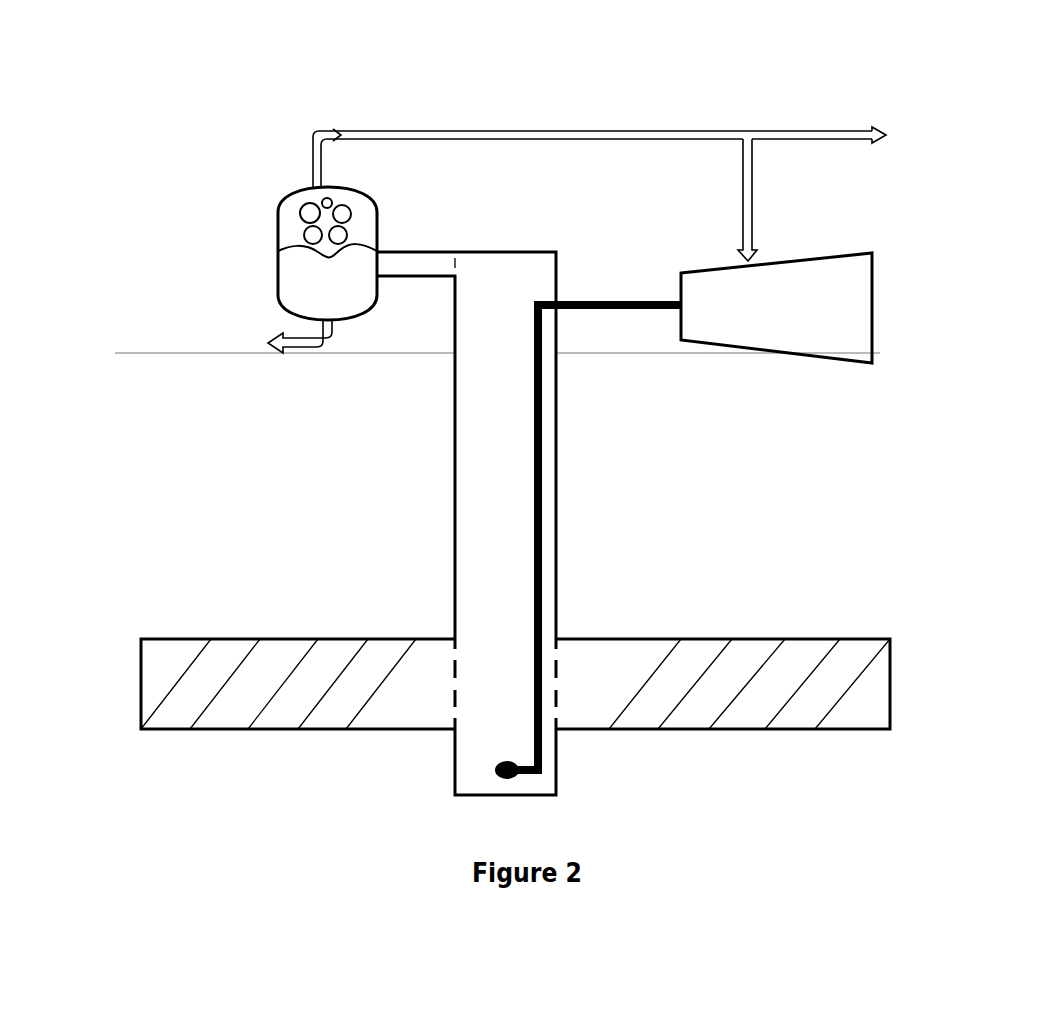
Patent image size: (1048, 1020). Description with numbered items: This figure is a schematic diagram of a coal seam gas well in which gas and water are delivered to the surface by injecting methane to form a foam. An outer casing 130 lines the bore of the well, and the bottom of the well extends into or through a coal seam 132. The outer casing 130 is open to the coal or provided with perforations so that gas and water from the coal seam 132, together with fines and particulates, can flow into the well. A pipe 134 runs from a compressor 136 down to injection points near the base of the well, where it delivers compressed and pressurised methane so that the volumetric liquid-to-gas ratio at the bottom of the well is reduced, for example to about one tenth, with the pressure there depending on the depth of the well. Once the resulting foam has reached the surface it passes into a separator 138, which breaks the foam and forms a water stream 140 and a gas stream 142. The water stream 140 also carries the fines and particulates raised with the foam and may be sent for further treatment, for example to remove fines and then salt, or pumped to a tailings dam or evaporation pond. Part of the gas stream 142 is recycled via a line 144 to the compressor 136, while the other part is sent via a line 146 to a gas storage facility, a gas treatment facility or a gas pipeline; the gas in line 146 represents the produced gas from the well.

The outer casing 130 is at (569, 572).
The coal seam 132 is at (903, 695).
The pipe 134 is at (555, 490).
The compressor 136 is at (890, 293).
The separator 138 is at (259, 232).
The water stream 140 is at (252, 332).
The gas stream 142 is at (365, 120).
The line 144 is at (769, 209).
The line 146 is at (891, 114).